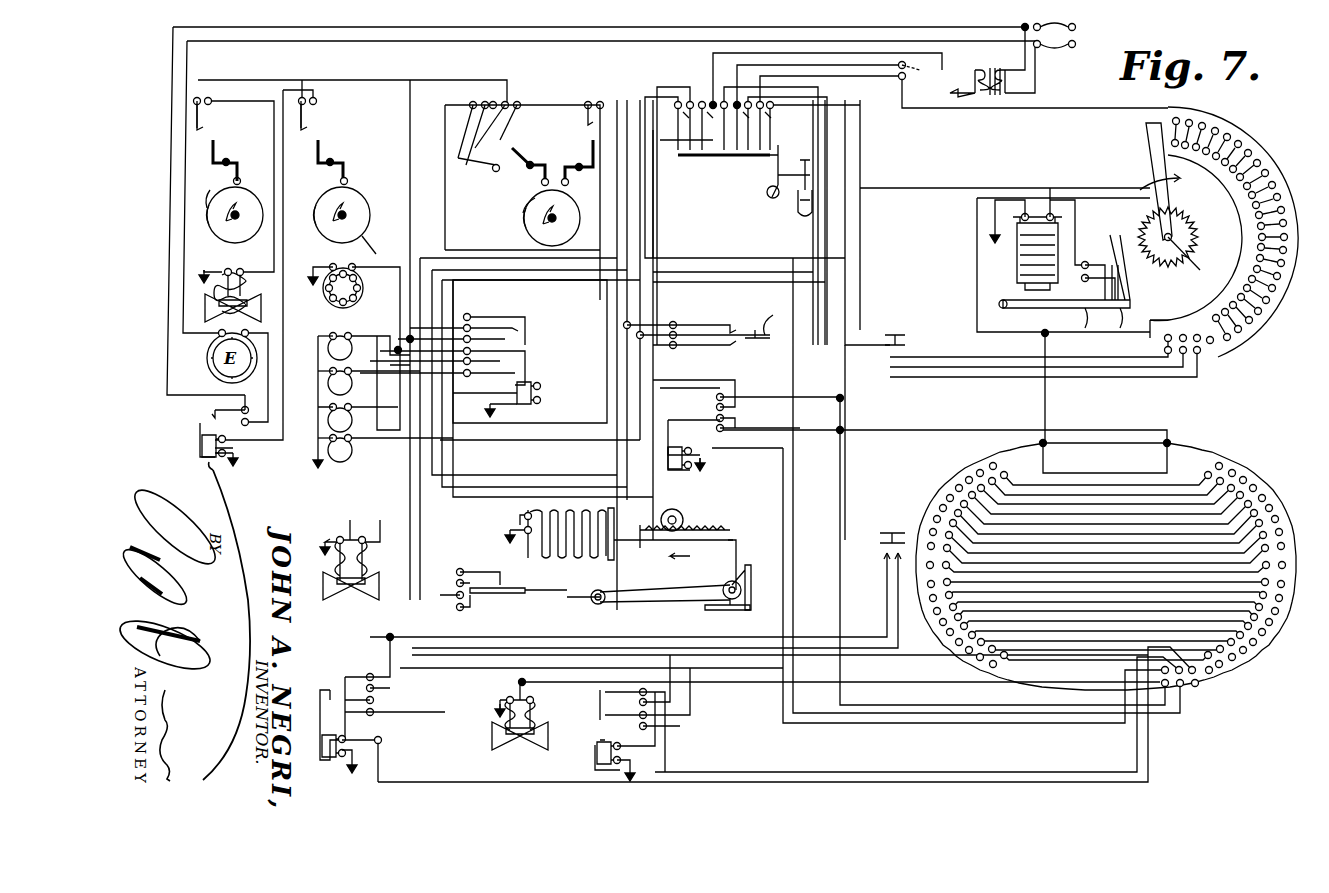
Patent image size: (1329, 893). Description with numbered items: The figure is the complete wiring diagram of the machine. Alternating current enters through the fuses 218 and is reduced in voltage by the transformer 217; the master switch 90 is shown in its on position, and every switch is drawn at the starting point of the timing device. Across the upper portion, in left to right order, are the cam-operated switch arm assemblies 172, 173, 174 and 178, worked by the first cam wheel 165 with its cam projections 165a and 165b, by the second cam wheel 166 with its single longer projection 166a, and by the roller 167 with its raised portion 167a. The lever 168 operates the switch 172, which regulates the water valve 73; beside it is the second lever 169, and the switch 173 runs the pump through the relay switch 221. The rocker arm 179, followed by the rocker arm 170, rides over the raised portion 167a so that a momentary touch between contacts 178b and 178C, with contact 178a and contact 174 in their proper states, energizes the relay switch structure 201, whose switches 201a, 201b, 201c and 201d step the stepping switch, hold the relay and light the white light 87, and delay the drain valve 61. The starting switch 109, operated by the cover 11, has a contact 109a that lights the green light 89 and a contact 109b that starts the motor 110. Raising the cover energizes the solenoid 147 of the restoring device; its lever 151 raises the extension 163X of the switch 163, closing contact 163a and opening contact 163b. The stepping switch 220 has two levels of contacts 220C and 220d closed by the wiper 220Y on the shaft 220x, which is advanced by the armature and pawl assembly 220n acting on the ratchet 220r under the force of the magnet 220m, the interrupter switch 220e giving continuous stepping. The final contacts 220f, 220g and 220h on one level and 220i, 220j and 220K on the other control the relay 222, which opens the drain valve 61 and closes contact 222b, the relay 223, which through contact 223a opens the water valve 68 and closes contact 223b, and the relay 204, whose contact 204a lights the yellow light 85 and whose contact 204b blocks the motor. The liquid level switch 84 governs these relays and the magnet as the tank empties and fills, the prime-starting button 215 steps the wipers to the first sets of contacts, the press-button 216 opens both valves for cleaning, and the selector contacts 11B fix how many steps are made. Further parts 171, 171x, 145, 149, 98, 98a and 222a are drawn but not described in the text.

The first cam wheel 165 is at (235, 215).
The cam projection 165a is at (241, 177).
The cam projection 165b is at (200, 190).
The second cam wheel 166 is at (342, 215).
The cam projection 166a is at (379, 251).
The roller 167 is at (552, 218).
The raised portion 167a is at (525, 212).
The lever 168 is at (218, 150).
The second lever 169 is at (322, 167).
The rocker arm 170 is at (572, 178).
The contact 171 is at (346, 150).
The contact 171x is at (570, 162).
The switch 172 is at (210, 117).
The switch 173 is at (318, 112).
The switch arm assembly 174 is at (580, 118).
The switch 178 is at (523, 121).
The contact 178a is at (460, 125).
The contact 178b is at (500, 100).
The contact 178C is at (474, 175).
The rocker arm 179 is at (524, 170).
The water valve 73 is at (230, 286).
The motor 110 is at (364, 298).
The green light 89 is at (335, 347).
The white light 87 is at (335, 382).
The yellow light 85 is at (335, 449).
The relay switch 221 is at (195, 446).
The liquid level switch 84 is at (732, 180).
The transformer 217 is at (992, 62).
The fuses 218 is at (1049, 27).
The master switch 90 is at (911, 81).
The prime-starting button 215 is at (900, 324).
The press-button 216 is at (900, 526).
The stepping switch 220 is at (1137, 260).
The contact level 220C is at (1250, 134).
The wiper 220Y is at (1152, 162).
The ratchet 220r is at (1200, 230).
The shaft 220x is at (1195, 262).
The magnet 220m is at (1063, 262).
The interrupter switch 220e is at (1112, 262).
The armature and pawl assembly 220n is at (1138, 304).
The contact 220h is at (1162, 352).
The contact 220g is at (1192, 352).
The contact 220f is at (1210, 350).
The contact level 220d is at (1238, 463).
The contact 220i is at (1197, 685).
The contact 220j is at (1180, 687).
The contact 220K is at (1165, 687).
The selector contacts 11B is at (962, 470).
The contact 98 is at (1000, 675).
The contact 98a is at (1010, 663).
The relay switch structure 201 is at (528, 362).
The switch 201a is at (500, 326).
The switch 201b is at (518, 318).
The switch 201c is at (520, 340).
The switch 201d is at (548, 383).
The starting switch 109 is at (684, 318).
The contact 109a is at (727, 322).
The contact 109b is at (695, 350).
The cover 11 is at (767, 324).
The relay switch structure 204 is at (742, 398).
The contact 204a is at (690, 385).
The contact 204b is at (710, 425).
The solenoid 147 is at (580, 500).
The gear 145 is at (684, 512).
The roller 149 is at (722, 586).
The lever 151 is at (697, 612).
The switch 163 is at (520, 595).
The contact 163a is at (500, 565).
The contact 163b is at (484, 619).
The extension 163X is at (552, 590).
The drain valve 61 is at (352, 598).
The relay 222 is at (346, 709).
The relay contact 222a is at (360, 660).
The contact 222b is at (355, 700).
The water valve 68 is at (511, 740).
The relay 223 is at (590, 732).
The contact 223a is at (625, 691).
The contact 223b is at (625, 717).